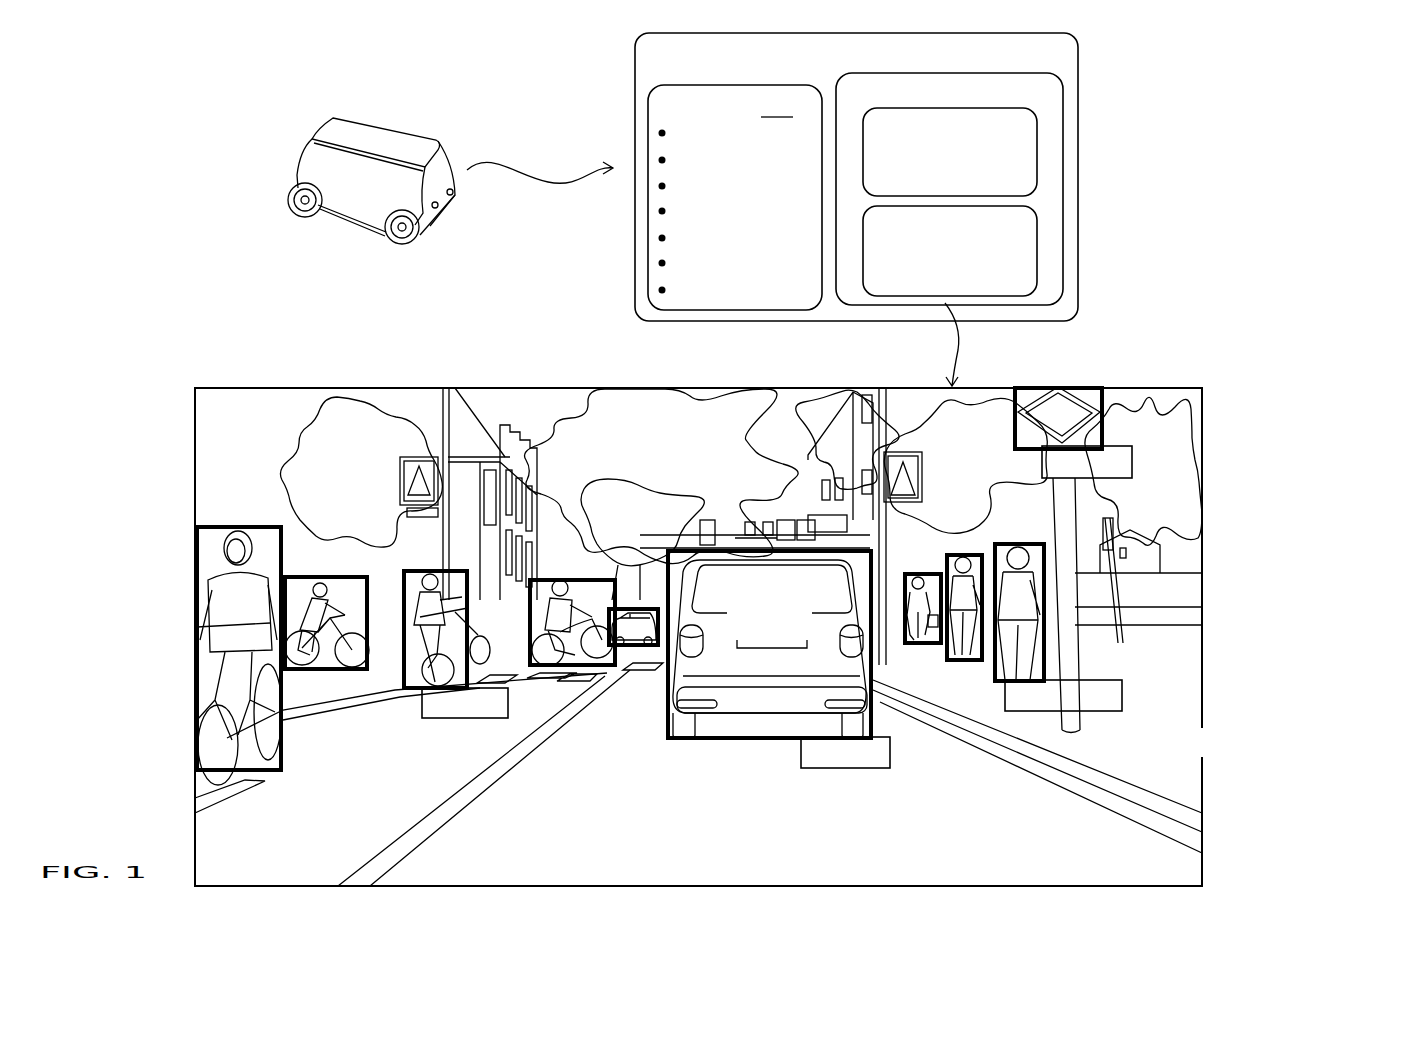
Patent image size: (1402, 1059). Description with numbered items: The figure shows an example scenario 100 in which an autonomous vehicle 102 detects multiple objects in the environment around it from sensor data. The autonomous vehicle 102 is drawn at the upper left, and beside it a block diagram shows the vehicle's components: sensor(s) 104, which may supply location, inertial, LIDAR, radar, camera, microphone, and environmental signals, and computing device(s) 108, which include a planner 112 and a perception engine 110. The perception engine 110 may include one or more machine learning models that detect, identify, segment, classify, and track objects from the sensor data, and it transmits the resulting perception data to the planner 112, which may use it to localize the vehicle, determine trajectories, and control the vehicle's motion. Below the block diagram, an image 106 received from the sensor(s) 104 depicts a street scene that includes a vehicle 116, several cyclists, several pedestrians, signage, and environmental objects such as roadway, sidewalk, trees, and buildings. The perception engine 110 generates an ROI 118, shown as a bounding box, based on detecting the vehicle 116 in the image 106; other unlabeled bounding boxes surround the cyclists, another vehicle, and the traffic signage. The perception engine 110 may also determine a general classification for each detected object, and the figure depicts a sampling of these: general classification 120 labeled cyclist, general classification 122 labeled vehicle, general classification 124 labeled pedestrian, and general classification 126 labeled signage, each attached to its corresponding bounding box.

The example scenario 100 is at (140, 79).
The autonomous vehicle 102 is at (357, 137).
The sensor(s) 104 is at (960, 61).
The image 106 is at (353, 388).
The computing device(s) 108 is at (1052, 103).
The perception engine 110 is at (963, 273).
The planner 112 is at (1000, 161).
The vehicle 116 is at (785, 645).
The ROI 118 is at (750, 740).
The general classification 120 is at (502, 723).
The general classification 122 is at (845, 768).
The general classification 124 is at (1018, 711).
The general classification 126 is at (1080, 478).